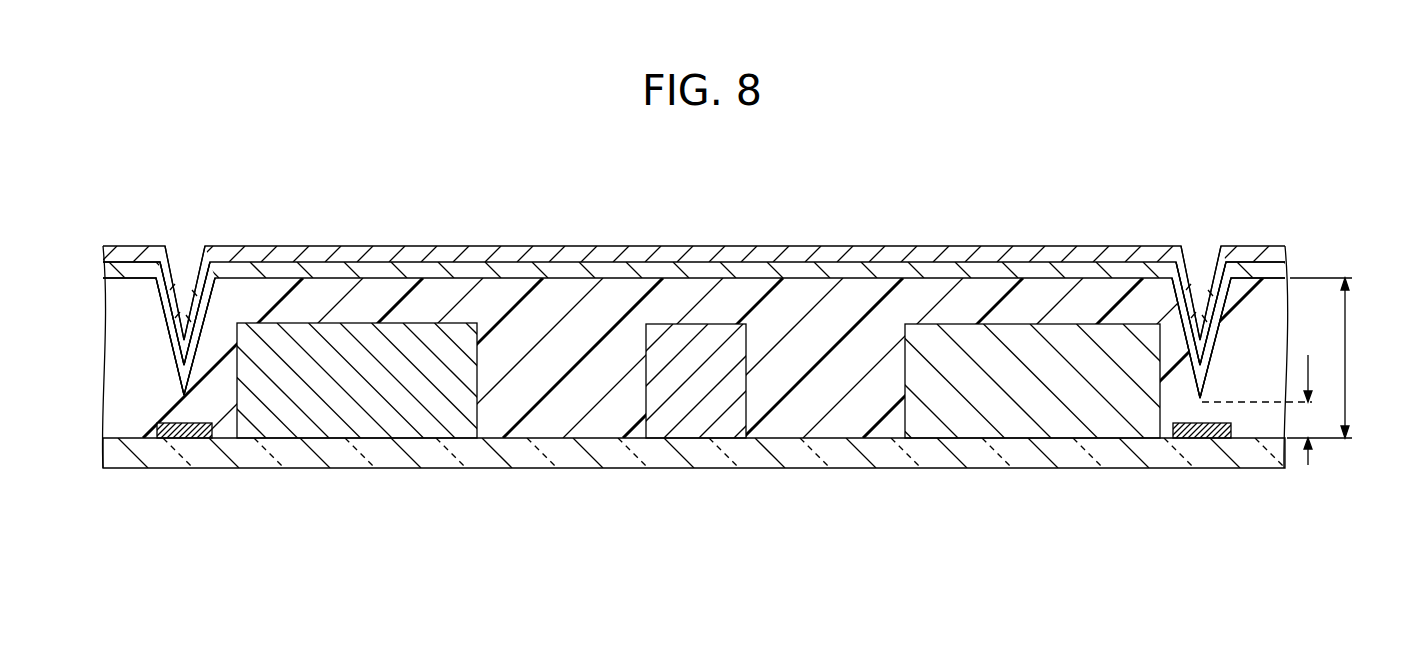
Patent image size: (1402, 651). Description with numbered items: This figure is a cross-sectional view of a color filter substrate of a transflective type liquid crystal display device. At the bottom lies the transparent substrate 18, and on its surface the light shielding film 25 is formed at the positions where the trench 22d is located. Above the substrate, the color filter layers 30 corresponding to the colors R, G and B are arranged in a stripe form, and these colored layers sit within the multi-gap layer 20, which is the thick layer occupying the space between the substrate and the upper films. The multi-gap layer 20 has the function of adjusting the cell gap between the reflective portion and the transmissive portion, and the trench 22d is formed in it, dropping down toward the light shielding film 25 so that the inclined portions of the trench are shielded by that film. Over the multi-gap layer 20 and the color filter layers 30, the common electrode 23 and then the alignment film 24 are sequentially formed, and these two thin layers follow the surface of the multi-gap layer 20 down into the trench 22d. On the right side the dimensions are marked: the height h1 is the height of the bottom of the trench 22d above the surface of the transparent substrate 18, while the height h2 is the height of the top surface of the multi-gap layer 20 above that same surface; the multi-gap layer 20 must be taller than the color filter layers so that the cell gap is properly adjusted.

The transparent substrate 18 is at (837, 457).
The multi-gap layer 20 is at (117, 367).
The trench 22d is at (183, 278).
The common electrode 23 is at (292, 270).
The alignment film 24 is at (368, 253).
The light shielding film 25 is at (178, 438).
The color filter layers 30 is at (355, 422).
The height of the trench bottom h1 is at (1268, 408).
The height of the top surface of the multi-gap layer h2 is at (1332, 358).